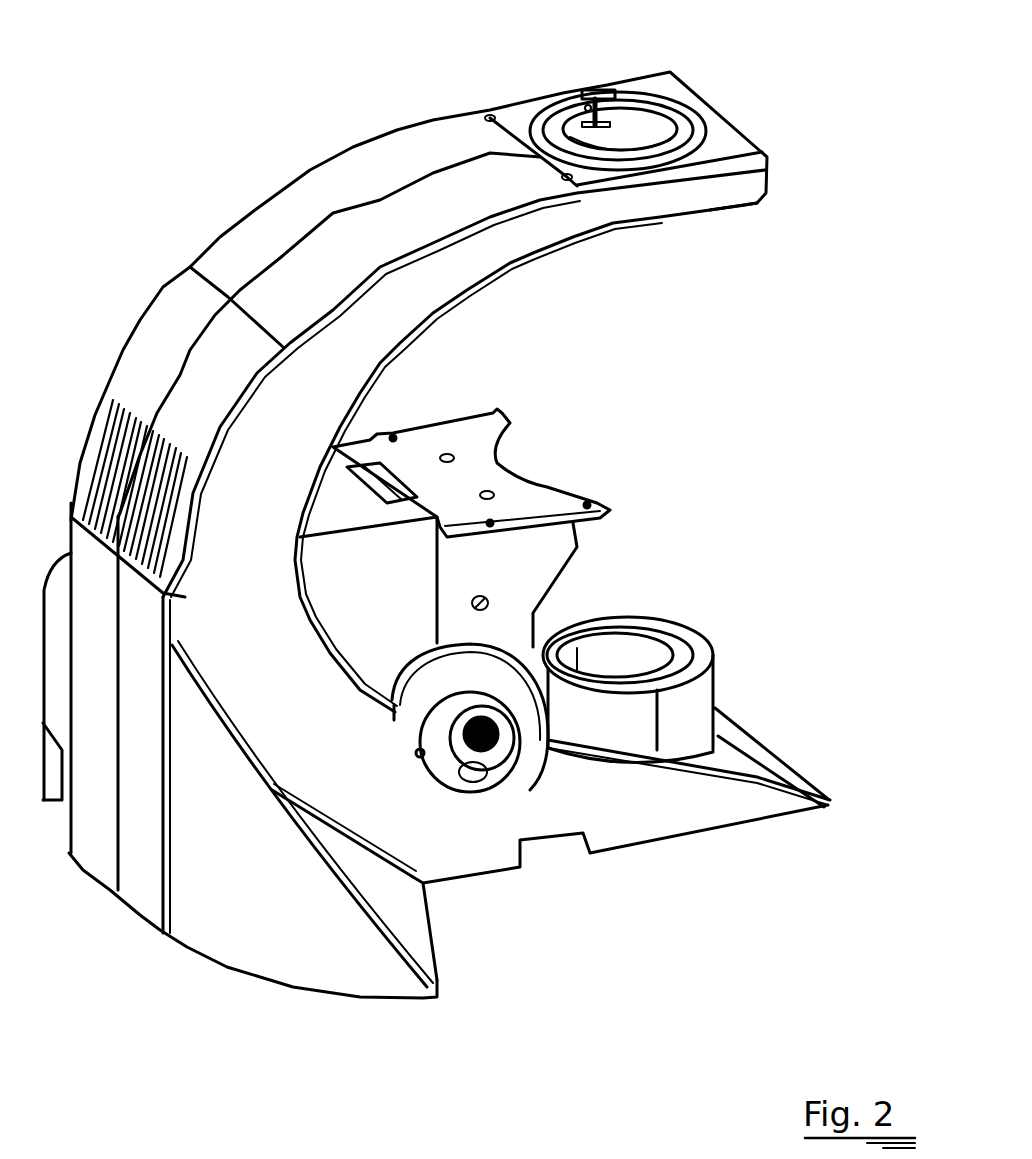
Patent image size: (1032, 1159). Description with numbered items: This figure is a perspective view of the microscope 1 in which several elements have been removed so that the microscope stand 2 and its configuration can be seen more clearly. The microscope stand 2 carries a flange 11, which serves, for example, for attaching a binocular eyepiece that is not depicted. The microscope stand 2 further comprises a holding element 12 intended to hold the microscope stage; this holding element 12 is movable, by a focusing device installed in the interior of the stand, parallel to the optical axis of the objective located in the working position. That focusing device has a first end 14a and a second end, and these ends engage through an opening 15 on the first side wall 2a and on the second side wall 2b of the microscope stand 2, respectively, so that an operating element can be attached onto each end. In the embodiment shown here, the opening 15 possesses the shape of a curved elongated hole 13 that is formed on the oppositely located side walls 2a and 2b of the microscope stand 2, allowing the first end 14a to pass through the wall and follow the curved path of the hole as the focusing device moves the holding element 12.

The microscope 1 is at (186, 193).
The microscope stand 2 is at (160, 340).
The first side wall 2a is at (515, 238).
The second side wall 2b is at (310, 170).
The flange 11 is at (590, 92).
The holding element 12 is at (467, 437).
The curved elongated hole 13 is at (443, 813).
The first end 14a is at (490, 722).
The opening 15 is at (463, 779).